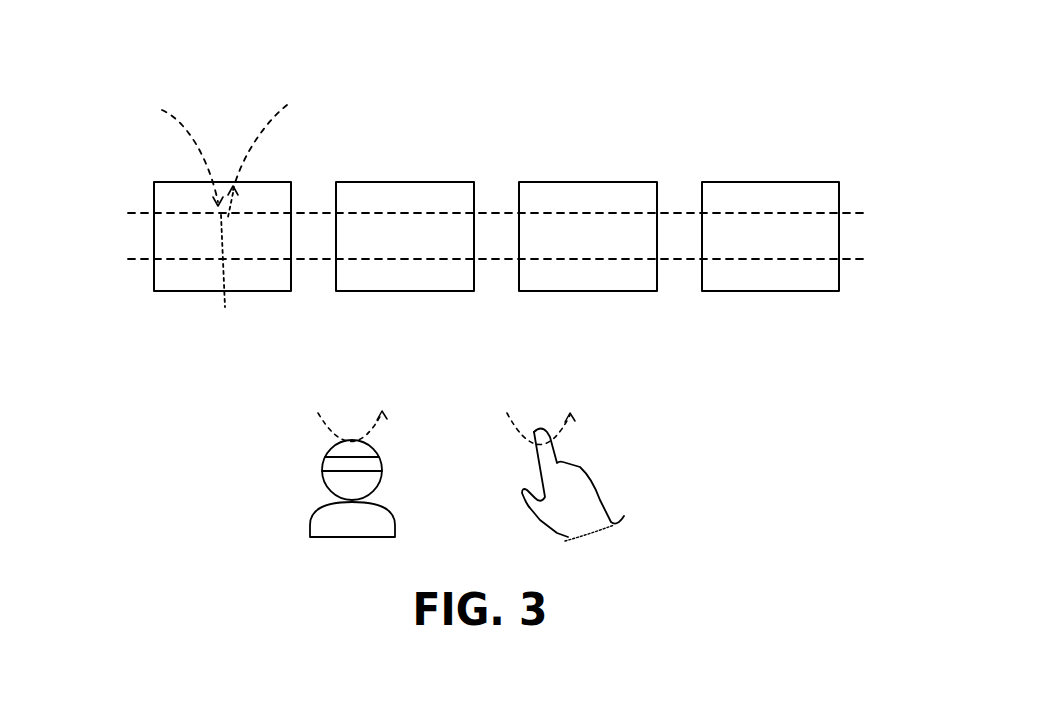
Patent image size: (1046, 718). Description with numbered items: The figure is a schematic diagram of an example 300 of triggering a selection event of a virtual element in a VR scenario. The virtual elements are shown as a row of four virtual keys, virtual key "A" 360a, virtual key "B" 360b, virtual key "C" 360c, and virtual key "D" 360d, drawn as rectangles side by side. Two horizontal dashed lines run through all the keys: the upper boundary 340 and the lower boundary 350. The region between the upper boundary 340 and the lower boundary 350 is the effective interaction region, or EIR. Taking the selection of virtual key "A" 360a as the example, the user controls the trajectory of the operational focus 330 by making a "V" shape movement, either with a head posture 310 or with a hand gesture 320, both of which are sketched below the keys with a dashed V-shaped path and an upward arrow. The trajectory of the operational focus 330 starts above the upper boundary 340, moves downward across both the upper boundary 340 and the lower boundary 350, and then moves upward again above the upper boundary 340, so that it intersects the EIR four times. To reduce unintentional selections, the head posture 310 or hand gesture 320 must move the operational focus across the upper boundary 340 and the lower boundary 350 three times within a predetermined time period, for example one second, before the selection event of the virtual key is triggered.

The example 300 is at (910, 118).
The head posture 310 is at (387, 438).
The hand gesture 320 is at (578, 440).
The trajectory of the operational focus 330 is at (163, 111).
The upper boundary 340 is at (128, 213).
The lower boundary 350 is at (128, 259).
The virtual key "A" 360a is at (177, 283).
The virtual key "B" 360b is at (361, 283).
The virtual key "C" 360c is at (543, 283).
The virtual key "D" 360d is at (720, 283).